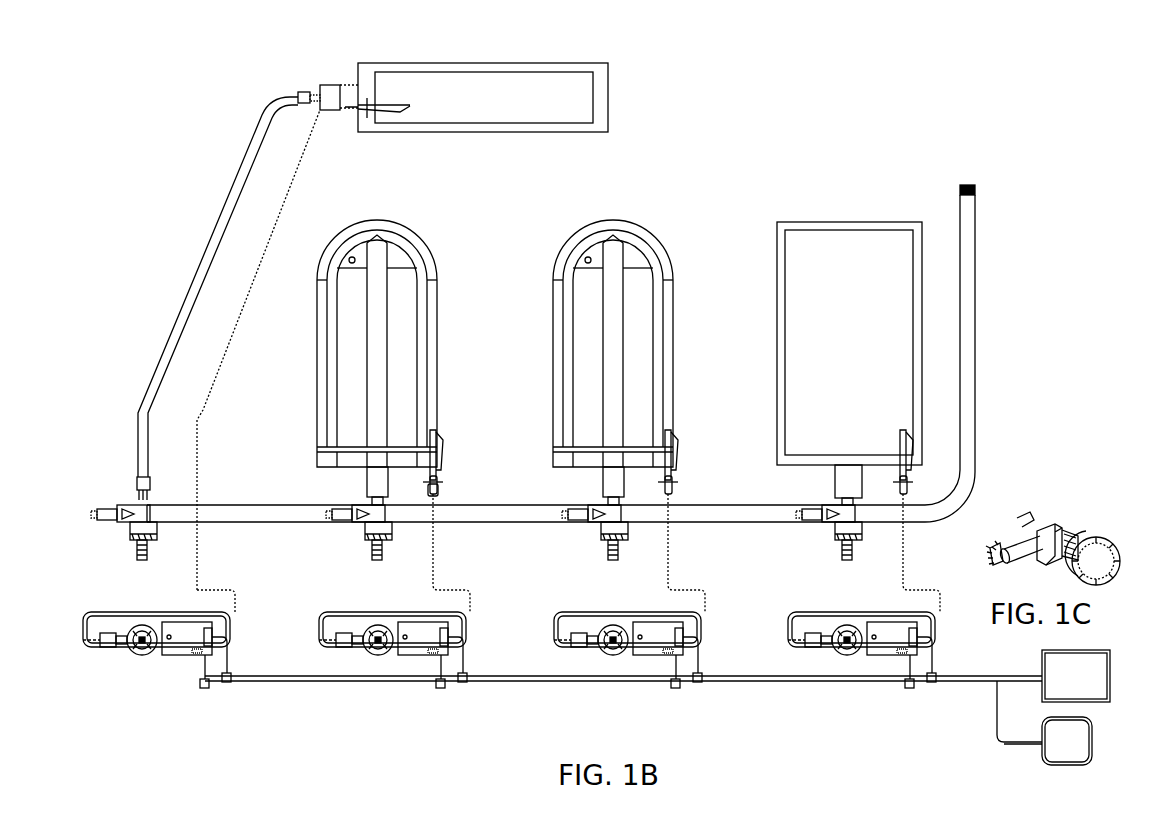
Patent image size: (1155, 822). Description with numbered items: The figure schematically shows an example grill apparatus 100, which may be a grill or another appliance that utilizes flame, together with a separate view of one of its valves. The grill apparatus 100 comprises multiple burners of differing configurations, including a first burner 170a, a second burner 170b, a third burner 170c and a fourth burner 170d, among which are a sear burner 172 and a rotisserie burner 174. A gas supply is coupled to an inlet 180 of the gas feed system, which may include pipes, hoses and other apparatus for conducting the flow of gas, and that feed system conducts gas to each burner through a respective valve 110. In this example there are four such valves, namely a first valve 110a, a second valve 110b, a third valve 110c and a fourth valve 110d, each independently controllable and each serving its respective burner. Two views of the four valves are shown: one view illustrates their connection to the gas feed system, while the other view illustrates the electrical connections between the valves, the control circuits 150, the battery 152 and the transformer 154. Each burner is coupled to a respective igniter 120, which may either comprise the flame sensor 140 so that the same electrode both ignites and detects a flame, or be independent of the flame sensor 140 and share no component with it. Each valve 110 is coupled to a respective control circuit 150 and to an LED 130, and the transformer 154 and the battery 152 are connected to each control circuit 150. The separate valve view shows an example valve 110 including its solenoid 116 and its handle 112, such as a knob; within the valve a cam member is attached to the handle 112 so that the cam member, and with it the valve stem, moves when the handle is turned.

In FIG. 1B, the grill apparatus 100 is at (176, 126).
In FIG. 1C, the valve 110 is at (1047, 524).
In FIG. 1B, the first valve 110a is at (112, 527).
In FIG. 1B, the second valve 110b is at (375, 620).
In FIG. 1B, the third valve 110c is at (583, 527).
In FIG. 1B, the fourth valve 110d is at (820, 527).
In FIG. 1B, the handle 112 is at (370, 656).
In FIG. 1C, the handle 112 is at (1100, 573).
In FIG. 1C, the solenoid 116 is at (1002, 527).
In FIG. 1B, the igniter 120 is at (443, 488).
In FIG. 1B, the LED 130 is at (403, 650).
In FIG. 1B, the flame sensor 140 is at (437, 432).
In FIG. 1B, the control circuit 150 is at (420, 652).
In FIG. 1B, the battery 152 is at (1067, 741).
In FIG. 1B, the transformer 154 is at (1076, 676).
In FIG. 1B, the first burner 170a is at (470, 133).
In FIG. 1B, the second burner 170b is at (393, 227).
In FIG. 1B, the third burner 170c is at (628, 227).
In FIG. 1B, the fourth burner 170d is at (860, 223).
In FIG. 1B, the sear burner 172 is at (815, 230).
In FIG. 1B, the rotisserie burner 174 is at (463, 71).
In FIG. 1B, the inlet 180 is at (980, 203).